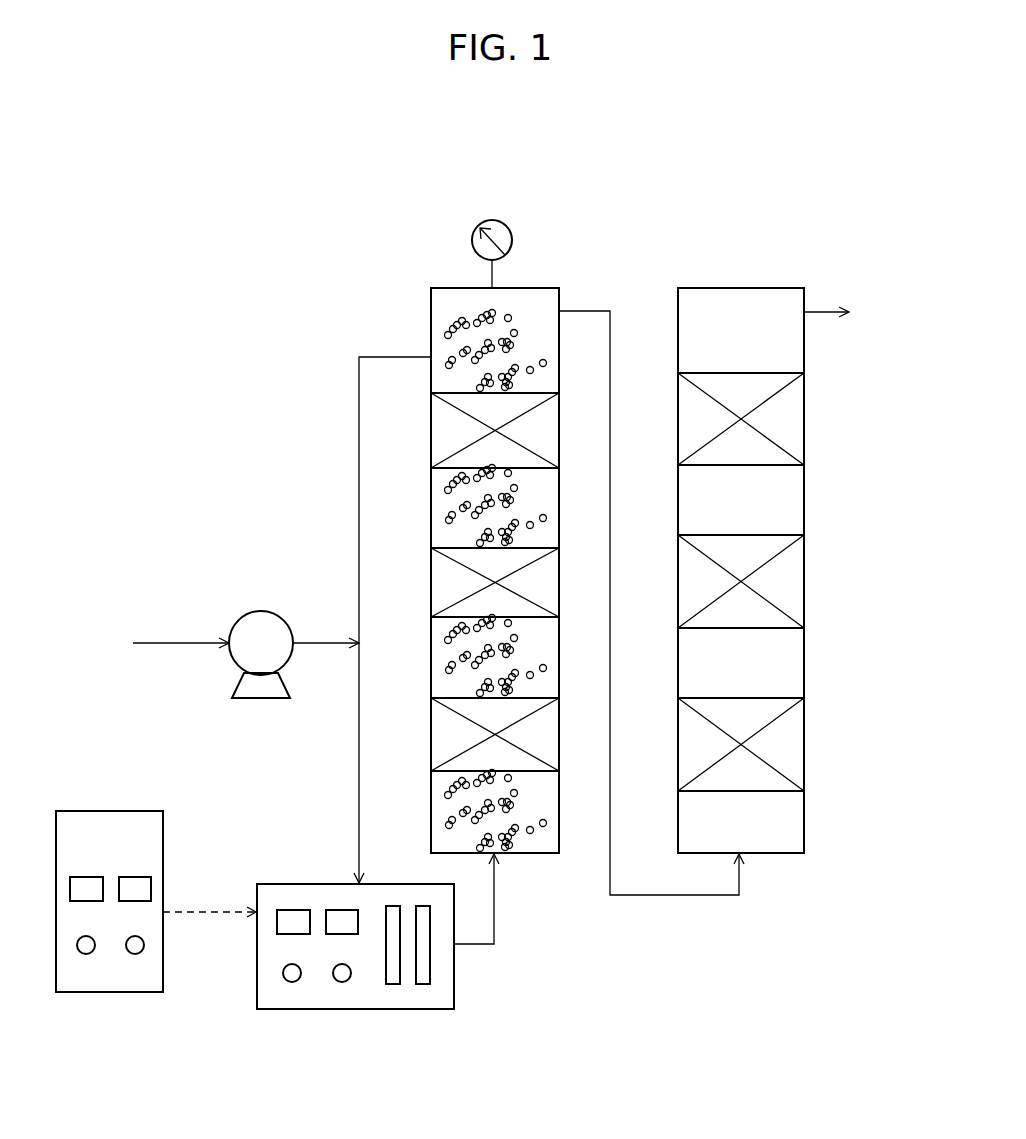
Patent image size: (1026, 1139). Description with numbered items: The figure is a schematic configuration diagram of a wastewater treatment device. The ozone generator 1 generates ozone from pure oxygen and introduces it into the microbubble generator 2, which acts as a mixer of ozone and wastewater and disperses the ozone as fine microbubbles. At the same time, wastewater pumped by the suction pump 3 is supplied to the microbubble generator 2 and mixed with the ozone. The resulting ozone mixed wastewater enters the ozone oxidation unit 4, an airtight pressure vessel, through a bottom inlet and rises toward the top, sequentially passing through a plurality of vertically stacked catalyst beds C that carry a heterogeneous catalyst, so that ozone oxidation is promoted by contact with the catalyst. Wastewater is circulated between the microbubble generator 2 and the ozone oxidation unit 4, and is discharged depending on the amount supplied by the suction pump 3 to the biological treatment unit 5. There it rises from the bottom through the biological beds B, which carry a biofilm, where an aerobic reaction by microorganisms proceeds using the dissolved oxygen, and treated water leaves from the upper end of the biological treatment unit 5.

The ozone generator 1 is at (110, 810).
The microbubble generator 2 is at (456, 978).
The suction pump 3 is at (262, 611).
The ozone oxidation unit 4 is at (452, 536).
The biological treatment unit 5 is at (781, 570).
The biological beds B is at (797, 589).
The catalyst beds C is at (431, 580).